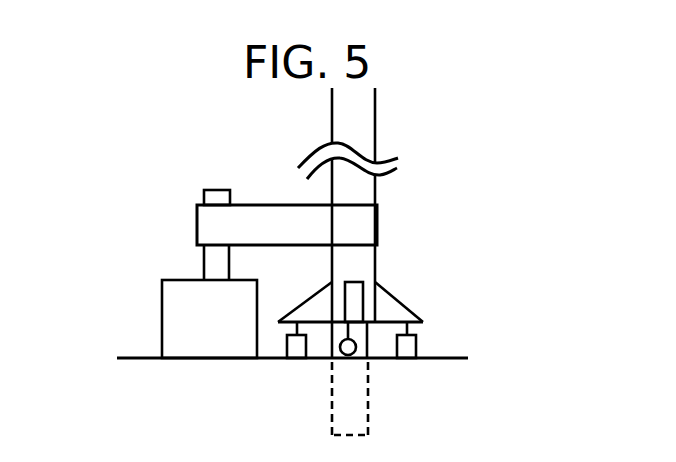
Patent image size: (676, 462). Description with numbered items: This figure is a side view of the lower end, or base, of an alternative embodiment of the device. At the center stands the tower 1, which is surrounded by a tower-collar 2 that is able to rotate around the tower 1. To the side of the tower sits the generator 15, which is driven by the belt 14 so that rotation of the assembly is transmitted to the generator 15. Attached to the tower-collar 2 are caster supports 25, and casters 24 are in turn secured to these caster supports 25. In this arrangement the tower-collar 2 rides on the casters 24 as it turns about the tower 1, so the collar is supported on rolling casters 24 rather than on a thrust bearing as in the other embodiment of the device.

The tower 1 is at (333, 387).
The tower-collar 2 is at (377, 260).
The belt 14 is at (273, 220).
The generator 15 is at (192, 310).
The casters 24 is at (413, 348).
The caster supports 25 is at (387, 313).